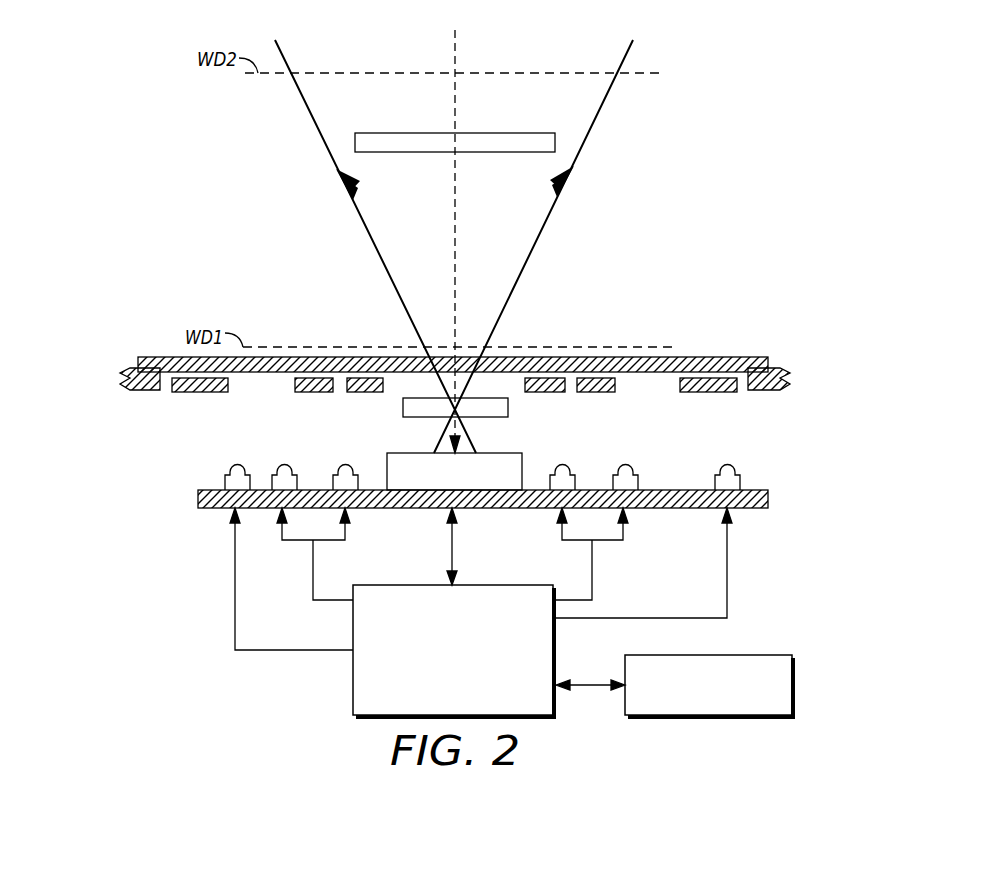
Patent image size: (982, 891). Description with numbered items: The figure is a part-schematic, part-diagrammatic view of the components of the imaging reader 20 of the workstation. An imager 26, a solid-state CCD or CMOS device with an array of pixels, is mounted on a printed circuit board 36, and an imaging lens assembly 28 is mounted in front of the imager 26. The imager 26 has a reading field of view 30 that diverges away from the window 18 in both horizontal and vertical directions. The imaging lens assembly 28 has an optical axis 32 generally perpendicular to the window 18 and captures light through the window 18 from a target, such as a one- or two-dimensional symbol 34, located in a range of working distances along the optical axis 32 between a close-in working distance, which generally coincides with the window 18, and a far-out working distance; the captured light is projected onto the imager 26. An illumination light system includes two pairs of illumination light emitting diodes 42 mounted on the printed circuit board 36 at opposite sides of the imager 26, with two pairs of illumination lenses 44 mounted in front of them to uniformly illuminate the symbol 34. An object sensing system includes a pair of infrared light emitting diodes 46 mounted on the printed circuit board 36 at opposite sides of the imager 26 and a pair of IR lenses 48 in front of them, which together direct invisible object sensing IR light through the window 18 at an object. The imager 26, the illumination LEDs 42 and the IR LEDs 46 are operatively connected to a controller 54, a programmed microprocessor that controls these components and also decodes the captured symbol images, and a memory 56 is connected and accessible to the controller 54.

The window 18 is at (150, 357).
The imaging reader 20 is at (792, 372).
The imager 26 is at (410, 453).
The imaging lens assembly 28 is at (413, 398).
The reading field of view 30 is at (598, 113).
The optical axis 32 is at (457, 45).
The symbol 34 is at (520, 133).
The printed circuit board 36 is at (770, 500).
The illumination light emitting diodes 42 is at (627, 447).
The illumination lenses 44 is at (590, 378).
The infrared light emitting diodes 46 is at (766, 478).
The IR lenses 48 is at (723, 410).
The controller 54 is at (353, 628).
The memory 56 is at (795, 684).